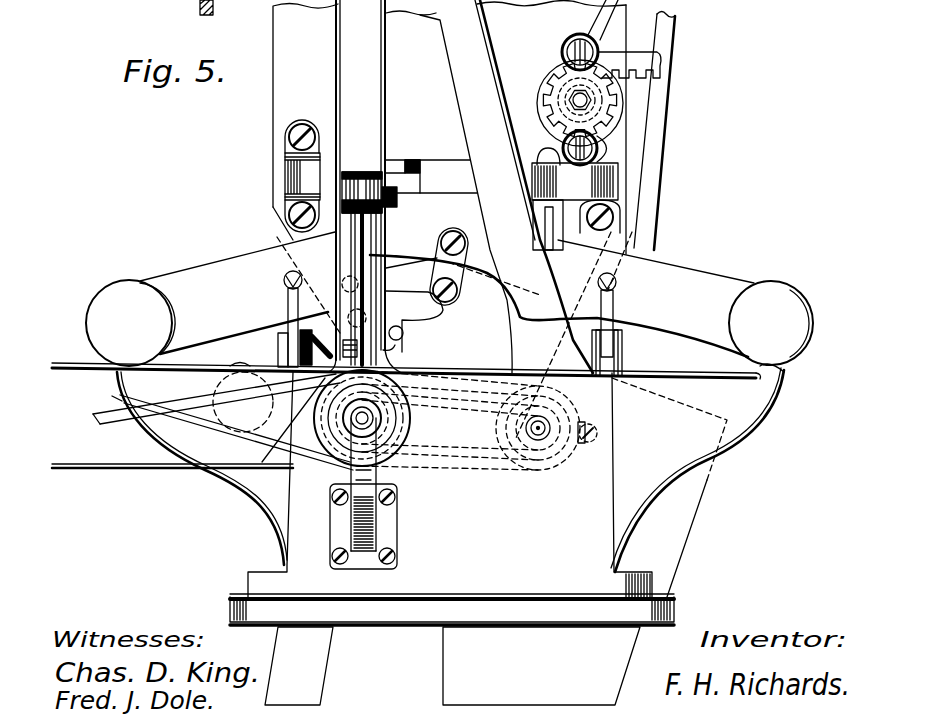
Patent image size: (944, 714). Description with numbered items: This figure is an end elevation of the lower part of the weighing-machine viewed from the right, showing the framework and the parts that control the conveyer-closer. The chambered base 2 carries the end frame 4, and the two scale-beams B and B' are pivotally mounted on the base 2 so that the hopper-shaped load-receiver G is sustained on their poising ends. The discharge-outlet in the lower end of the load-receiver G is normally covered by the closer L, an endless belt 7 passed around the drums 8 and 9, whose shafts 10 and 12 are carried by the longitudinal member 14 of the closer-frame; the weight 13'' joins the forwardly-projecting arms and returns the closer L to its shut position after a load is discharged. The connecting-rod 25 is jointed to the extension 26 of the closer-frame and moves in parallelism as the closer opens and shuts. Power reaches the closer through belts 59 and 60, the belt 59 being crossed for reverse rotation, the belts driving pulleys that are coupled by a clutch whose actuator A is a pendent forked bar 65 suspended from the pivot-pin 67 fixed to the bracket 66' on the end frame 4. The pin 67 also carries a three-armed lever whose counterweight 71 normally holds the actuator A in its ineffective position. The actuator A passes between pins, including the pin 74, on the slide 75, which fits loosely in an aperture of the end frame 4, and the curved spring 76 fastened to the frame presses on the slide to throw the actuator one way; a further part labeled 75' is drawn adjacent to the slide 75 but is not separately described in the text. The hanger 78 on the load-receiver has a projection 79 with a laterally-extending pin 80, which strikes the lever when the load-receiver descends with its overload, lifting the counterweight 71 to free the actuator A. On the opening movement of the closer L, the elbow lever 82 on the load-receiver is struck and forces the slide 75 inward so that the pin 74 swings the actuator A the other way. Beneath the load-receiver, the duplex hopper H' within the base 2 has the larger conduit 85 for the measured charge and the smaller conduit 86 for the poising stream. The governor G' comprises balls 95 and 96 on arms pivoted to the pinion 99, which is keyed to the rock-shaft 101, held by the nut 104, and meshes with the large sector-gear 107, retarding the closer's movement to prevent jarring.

The chambered base 2 is at (450, 482).
The end frame 4 is at (378, 84).
The endless belt 7 is at (434, 441).
The drum 8 is at (522, 430).
The drum 9 is at (404, 381).
The shaft 10 is at (538, 433).
The shaft 12 is at (356, 428).
The weight 13'' is at (248, 350).
The longitudinal member 14 is at (473, 433).
The connecting-rod 25 is at (640, 174).
The extension 26 is at (589, 443).
The belt 59 is at (214, 421).
The belt 60 is at (196, 470).
The pendent forked bar 65 is at (364, 262).
The bracket 66' is at (280, 176).
The pivot-pin 67 is at (398, 200).
The counterweight 71 is at (367, 171).
The pin 74 is at (383, 352).
The slide 75 is at (236, 432).
The rod 75' is at (282, 422).
The curved spring 76 is at (372, 300).
The hanger 78 is at (468, 176).
The projection 79 is at (408, 172).
The pin 80 is at (393, 168).
The elbow lever 82 is at (308, 302).
The conduit 85 is at (541, 666).
The conduit 86 is at (299, 666).
The ball 95 is at (577, 34).
The ball 96 is at (566, 146).
The pinion 99 is at (576, 97).
The rock-shaft 101 is at (571, 101).
The nut 104 is at (572, 98).
The sector-gear 107 is at (642, 66).
The clutch-actuator A is at (358, 288).
The scale-beam B is at (591, 306).
The scale-beam B' is at (210, 299).
The load-receiver G is at (449, 128).
The governor G' is at (578, 92).
The duplex hopper H' is at (452, 625).
The closer L is at (450, 422).